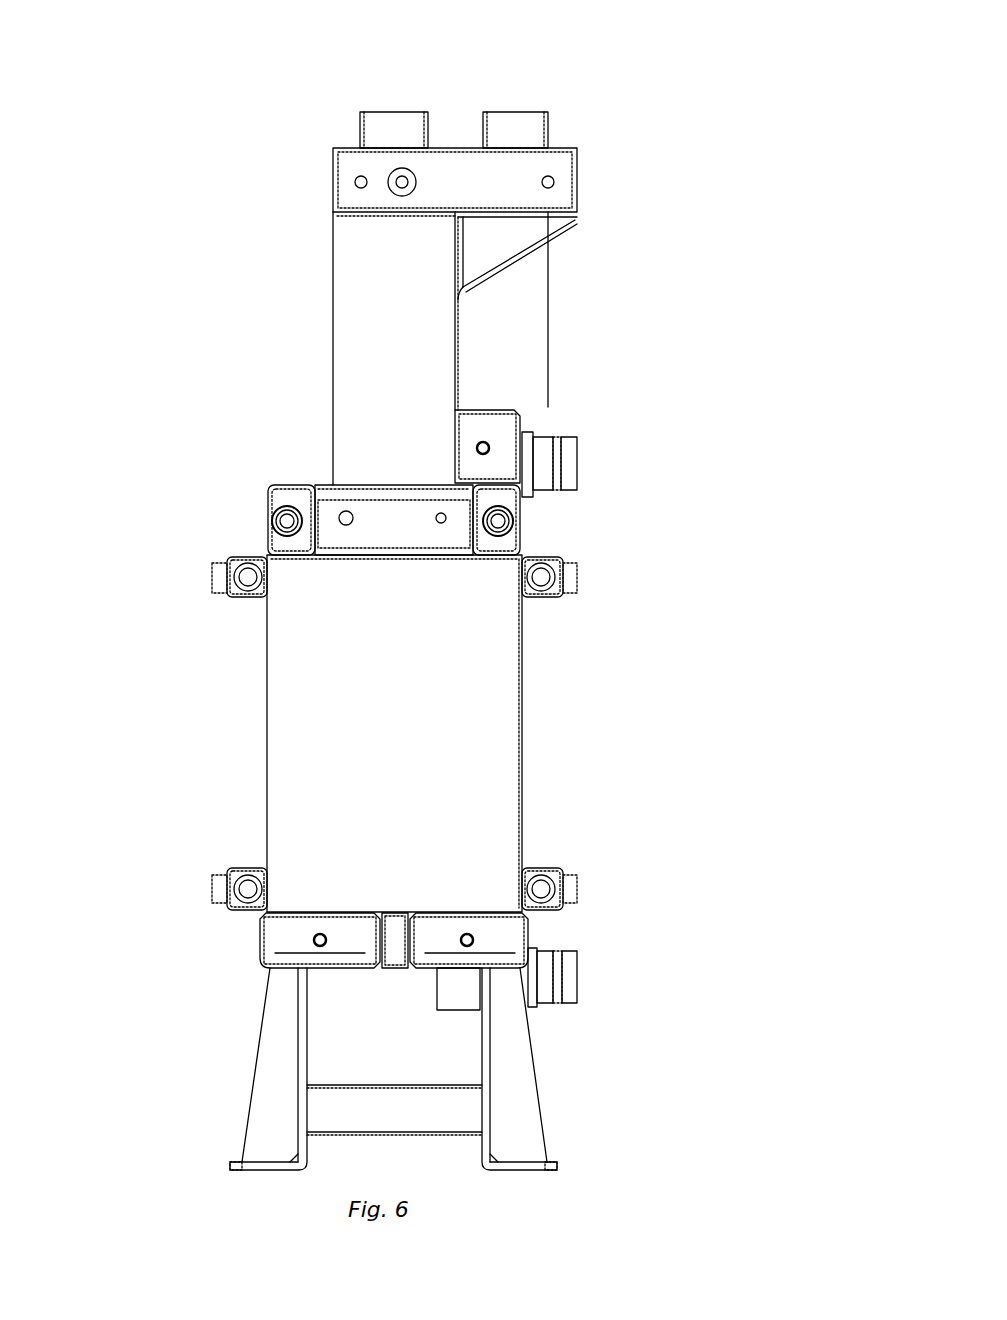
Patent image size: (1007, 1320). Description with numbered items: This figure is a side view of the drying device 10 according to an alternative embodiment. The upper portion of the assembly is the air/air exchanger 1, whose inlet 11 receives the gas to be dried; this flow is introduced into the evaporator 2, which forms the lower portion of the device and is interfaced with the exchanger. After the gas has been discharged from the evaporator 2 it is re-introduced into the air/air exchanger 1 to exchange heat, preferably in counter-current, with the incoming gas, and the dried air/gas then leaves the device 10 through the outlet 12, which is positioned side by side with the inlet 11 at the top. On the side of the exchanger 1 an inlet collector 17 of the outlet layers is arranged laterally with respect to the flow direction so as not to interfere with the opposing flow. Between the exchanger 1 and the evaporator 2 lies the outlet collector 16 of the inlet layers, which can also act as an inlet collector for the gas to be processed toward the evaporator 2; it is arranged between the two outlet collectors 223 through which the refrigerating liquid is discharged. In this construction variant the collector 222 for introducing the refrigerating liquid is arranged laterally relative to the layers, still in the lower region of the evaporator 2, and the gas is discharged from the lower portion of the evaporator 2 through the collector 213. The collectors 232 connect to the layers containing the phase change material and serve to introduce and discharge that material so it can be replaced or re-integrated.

The drying device 10 is at (687, 120).
The air/air exchanger 1 is at (253, 305).
The evaporator 2 is at (187, 753).
The inlet 11 is at (507, 135).
The outlet 12 is at (378, 135).
The outlet collector 16 is at (298, 508).
The inlet collector 17 is at (483, 448).
The collector 213 is at (486, 933).
The collector 222 is at (257, 893).
The outlet collectors 223 is at (541, 577).
The collectors 232 is at (233, 560).